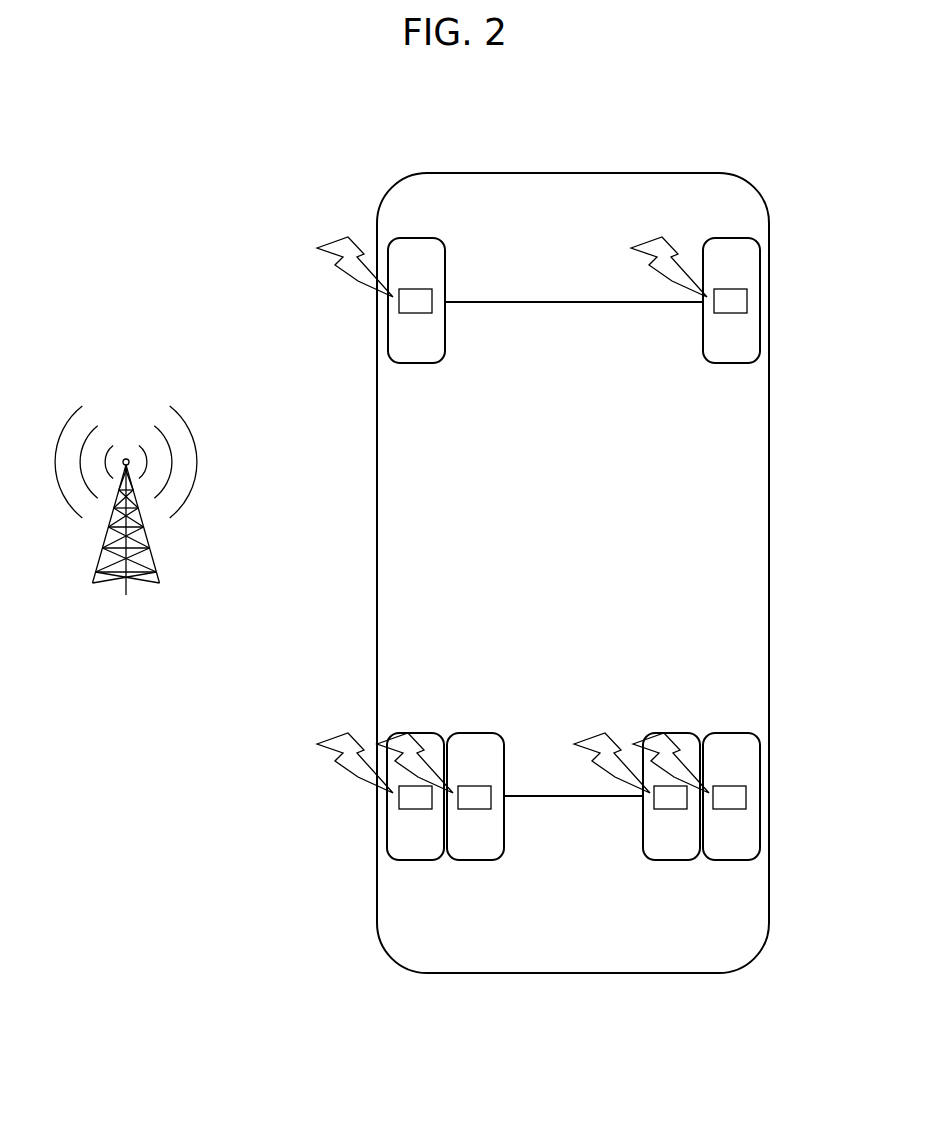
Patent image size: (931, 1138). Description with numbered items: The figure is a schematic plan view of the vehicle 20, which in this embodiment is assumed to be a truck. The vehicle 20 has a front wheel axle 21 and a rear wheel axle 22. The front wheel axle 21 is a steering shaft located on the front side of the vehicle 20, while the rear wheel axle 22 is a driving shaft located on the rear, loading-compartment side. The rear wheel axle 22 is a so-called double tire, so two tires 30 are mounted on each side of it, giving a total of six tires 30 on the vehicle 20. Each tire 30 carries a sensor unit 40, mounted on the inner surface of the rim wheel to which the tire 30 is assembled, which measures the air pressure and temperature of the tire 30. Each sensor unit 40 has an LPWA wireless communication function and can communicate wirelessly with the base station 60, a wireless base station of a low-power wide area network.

The vehicle 20 is at (563, 173).
The front wheel axle 21 is at (513, 302).
The rear wheel axle 22 is at (545, 796).
The tire 30 is at (422, 238).
The sensor unit 40 is at (415, 313).
The base station 60 is at (150, 553).